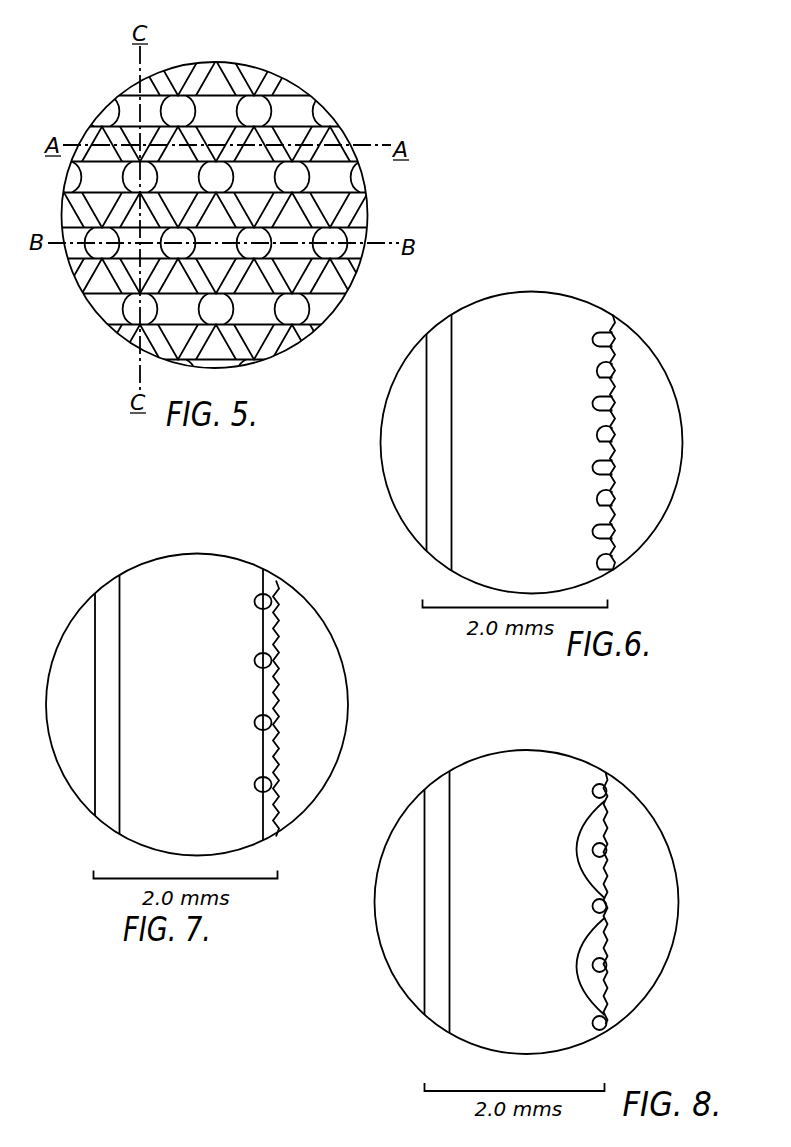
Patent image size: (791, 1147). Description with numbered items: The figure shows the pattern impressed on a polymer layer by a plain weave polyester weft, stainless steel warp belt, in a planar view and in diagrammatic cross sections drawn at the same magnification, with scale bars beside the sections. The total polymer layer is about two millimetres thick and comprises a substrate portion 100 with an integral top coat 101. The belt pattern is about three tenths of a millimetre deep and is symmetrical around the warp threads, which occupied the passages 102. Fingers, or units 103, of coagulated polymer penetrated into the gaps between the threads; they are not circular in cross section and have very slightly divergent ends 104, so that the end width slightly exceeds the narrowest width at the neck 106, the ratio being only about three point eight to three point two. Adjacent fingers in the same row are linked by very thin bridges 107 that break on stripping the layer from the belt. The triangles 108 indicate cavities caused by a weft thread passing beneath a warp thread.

In FIG. 6, the substrate portion 100 is at (562, 308).
In FIG. 7, the substrate portion 100 is at (224, 574).
In FIG. 8, the substrate portion 100 is at (560, 785).
In FIG. 6, the top coat 101 is at (430, 505).
In FIG. 7, the top coat 101 is at (101, 776).
In FIG. 8, the top coat 101 is at (432, 973).
In FIG. 5, the passages 102 is at (298, 108).
In FIG. 7, the passages 102 is at (271, 614).
In FIG. 8, the passages 102 is at (607, 853).
In FIG. 6, the fingers 103 is at (618, 387).
In FIG. 7, the fingers 103 is at (273, 656).
In FIG. 8, the fingers 103 is at (610, 827).
In FIG. 5, the divergent ends 104 is at (322, 146).
In FIG. 6, the divergent ends 104 is at (615, 452).
In FIG. 7, the divergent ends 104 is at (273, 729).
In FIG. 8, the divergent ends 104 is at (610, 882).
In FIG. 6, the neck 106 is at (613, 442).
In FIG. 8, the neck 106 is at (610, 902).
In FIG. 6, the bridges 107 is at (612, 498).
In FIG. 5, the triangles 108 is at (127, 267).